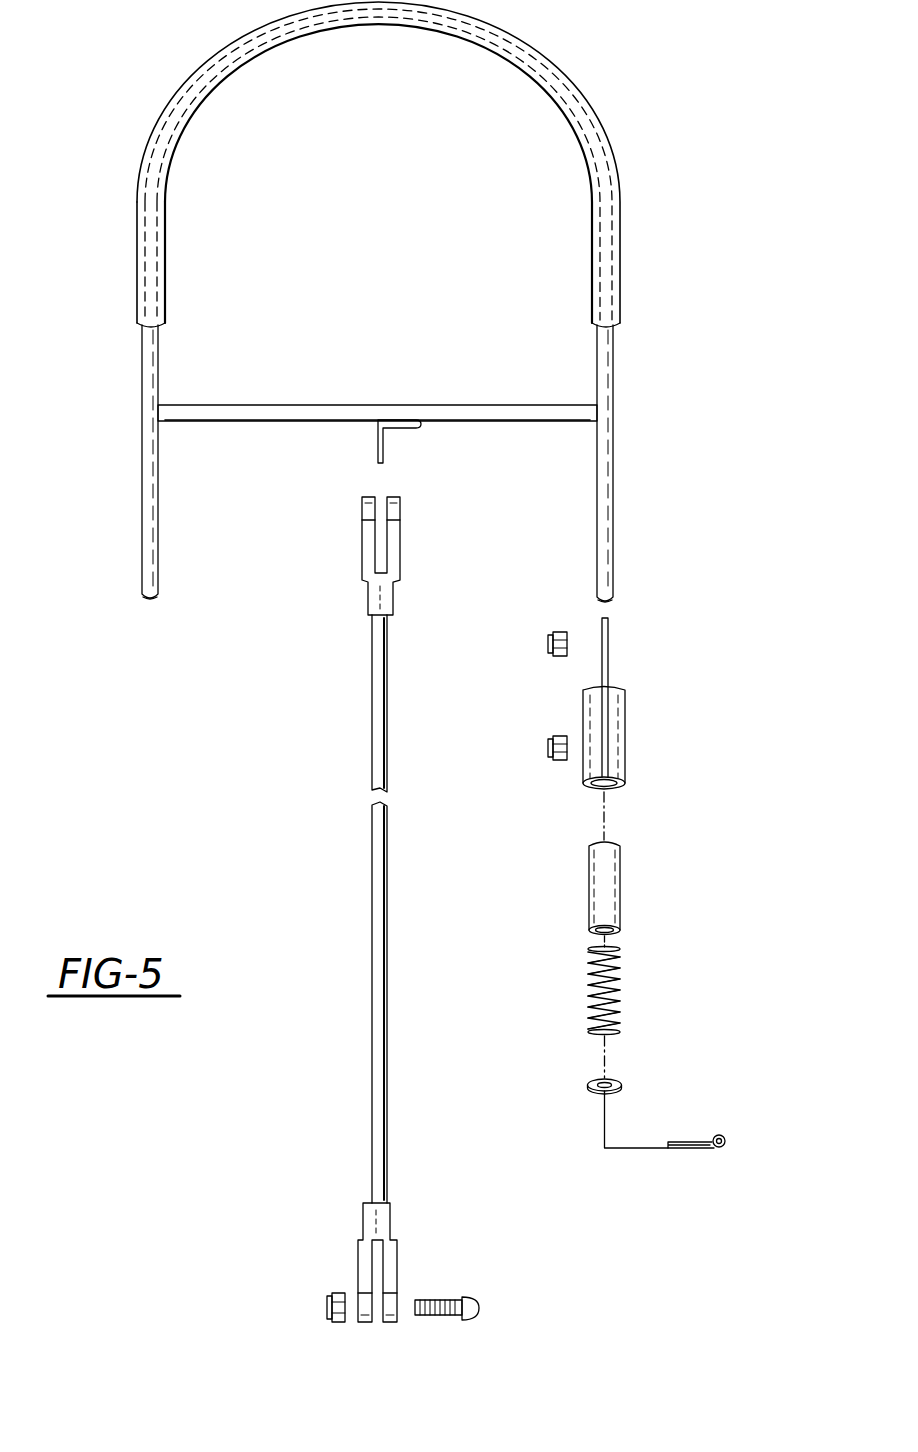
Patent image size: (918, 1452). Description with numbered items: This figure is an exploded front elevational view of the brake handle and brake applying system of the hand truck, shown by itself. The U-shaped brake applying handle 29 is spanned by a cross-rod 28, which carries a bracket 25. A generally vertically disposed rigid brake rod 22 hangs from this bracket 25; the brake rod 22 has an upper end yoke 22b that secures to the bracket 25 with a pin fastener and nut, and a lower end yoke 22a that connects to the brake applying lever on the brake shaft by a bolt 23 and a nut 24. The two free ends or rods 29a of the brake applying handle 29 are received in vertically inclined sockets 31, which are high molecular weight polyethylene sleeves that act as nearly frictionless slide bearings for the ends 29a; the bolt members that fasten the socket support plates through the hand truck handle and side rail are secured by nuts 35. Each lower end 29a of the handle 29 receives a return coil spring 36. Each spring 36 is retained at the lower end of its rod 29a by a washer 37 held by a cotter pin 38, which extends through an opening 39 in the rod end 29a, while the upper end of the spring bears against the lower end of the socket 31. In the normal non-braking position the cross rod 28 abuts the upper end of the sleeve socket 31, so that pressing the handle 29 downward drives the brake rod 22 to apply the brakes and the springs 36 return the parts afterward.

The brake rod 22 is at (387, 995).
The lower end yoke 22a is at (397, 1268).
The upper end yoke 22b is at (400, 563).
The bolt 23 is at (445, 1300).
The nut 24 is at (327, 1300).
The bracket 25 is at (378, 425).
The cross-rod 28 is at (285, 410).
The brake applying handle 29 is at (600, 128).
The free ends or rods 29a is at (158, 571).
The sockets or tubes 31 is at (620, 903).
The nuts 35 is at (548, 638).
The return coil springs 36 is at (620, 970).
The washer 37 is at (621, 1086).
The cotter pin 38 is at (725, 1146).
The opening 39 is at (142, 590).